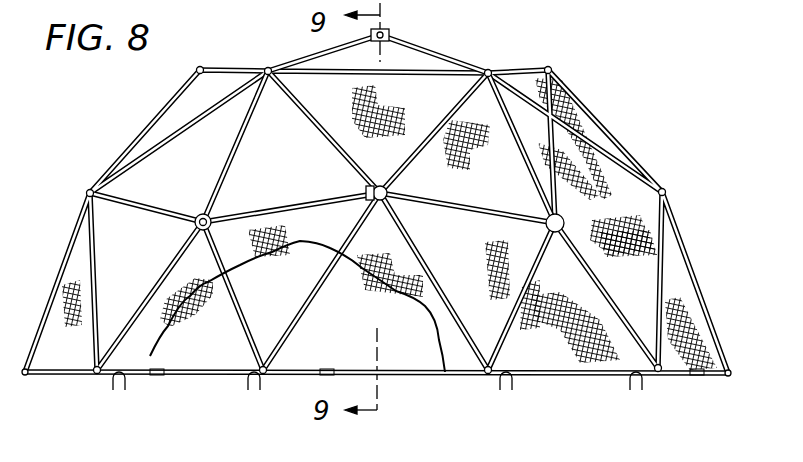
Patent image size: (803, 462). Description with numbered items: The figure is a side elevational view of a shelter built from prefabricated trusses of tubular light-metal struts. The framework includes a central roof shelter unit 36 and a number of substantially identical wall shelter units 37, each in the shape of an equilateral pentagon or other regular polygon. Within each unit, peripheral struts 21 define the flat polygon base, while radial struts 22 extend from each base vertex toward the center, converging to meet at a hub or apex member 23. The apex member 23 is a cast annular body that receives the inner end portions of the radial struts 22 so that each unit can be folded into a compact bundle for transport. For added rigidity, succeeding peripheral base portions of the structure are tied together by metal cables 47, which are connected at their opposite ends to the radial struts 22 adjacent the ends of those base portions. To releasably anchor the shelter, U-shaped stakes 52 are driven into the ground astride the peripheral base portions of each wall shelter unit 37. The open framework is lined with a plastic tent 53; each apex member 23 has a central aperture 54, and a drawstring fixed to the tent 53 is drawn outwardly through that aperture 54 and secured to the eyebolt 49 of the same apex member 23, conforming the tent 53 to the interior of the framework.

The peripheral strut 21 is at (500, 68).
The radial strut 22 is at (298, 60).
The hub or apex member 23 is at (389, 33).
The roof shelter unit 36 is at (478, 47).
The wall shelter unit 37 is at (188, 147).
The metal cable 47 is at (72, 367).
The eyebolt 49 is at (370, 38).
The U-shaped stake 52 is at (112, 382).
The plastic tent 53 is at (181, 327).
The central aperture 54 is at (213, 219).